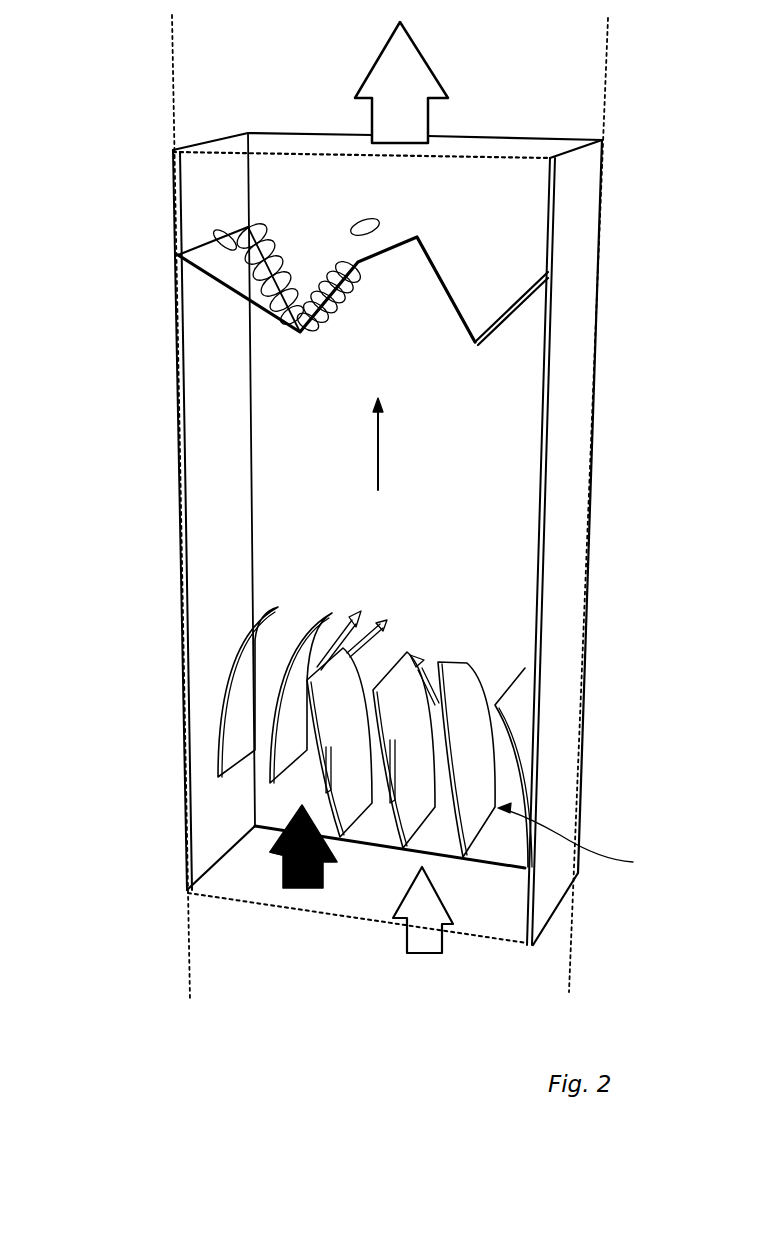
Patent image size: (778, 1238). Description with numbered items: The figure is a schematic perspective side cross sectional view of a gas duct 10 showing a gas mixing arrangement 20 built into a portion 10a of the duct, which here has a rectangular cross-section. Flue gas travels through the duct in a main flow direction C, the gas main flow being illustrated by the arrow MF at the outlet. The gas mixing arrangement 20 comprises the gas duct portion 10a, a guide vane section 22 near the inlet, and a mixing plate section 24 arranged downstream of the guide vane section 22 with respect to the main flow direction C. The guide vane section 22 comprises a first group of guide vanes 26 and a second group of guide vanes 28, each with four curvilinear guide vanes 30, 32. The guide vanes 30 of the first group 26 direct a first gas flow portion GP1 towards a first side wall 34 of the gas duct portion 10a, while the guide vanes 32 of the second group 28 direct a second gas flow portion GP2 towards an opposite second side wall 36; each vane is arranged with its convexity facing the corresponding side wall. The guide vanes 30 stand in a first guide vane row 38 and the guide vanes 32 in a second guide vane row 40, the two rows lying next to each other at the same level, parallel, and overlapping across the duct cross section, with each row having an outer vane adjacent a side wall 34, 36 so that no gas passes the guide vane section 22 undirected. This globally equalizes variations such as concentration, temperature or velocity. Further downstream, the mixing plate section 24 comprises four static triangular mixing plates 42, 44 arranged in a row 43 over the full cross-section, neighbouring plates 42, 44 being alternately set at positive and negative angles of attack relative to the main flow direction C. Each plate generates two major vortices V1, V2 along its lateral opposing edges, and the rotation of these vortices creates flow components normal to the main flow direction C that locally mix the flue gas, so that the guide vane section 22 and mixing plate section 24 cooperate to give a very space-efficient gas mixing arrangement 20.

The gas duct 10 is at (580, 270).
The gas duct portion 10a is at (582, 402).
The gas mixing arrangement 20 is at (147, 477).
The guide vane section 22 is at (188, 890).
The mixing plate section 24 is at (223, 305).
The first group of guide vanes 26 is at (210, 708).
The second group of guide vanes 28 is at (581, 841).
The guide vanes of the first group 30 is at (439, 717).
The guide vanes of the second group 32 is at (340, 838).
The first side wall 34 is at (568, 670).
The second side wall 36 is at (198, 772).
The first guide vane row 38 is at (223, 639).
The second guide vane row 40 is at (498, 777).
The mixing plate 42 is at (377, 303).
The mixing plate row 43 is at (515, 324).
The mixing plate 44 is at (343, 290).
The main flow arrow MF is at (420, 78).
The first gas flow portion GP1 is at (290, 890).
The second gas flow portion GP2 is at (423, 953).
The vortex V1 is at (218, 228).
The vortex V2 is at (268, 216).
The main flow direction C is at (397, 444).